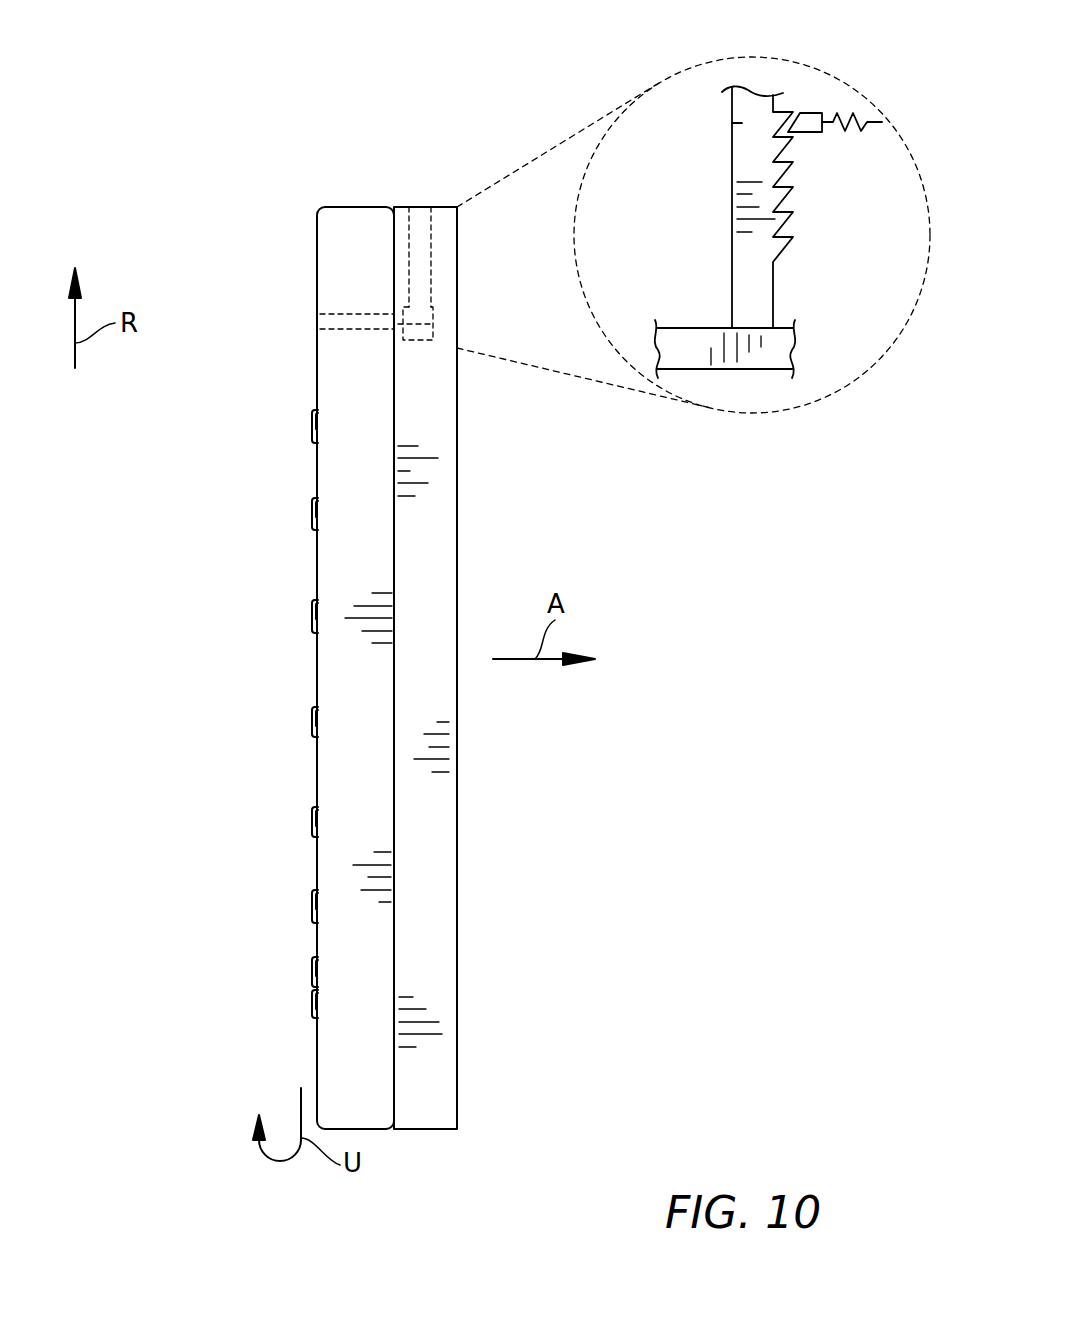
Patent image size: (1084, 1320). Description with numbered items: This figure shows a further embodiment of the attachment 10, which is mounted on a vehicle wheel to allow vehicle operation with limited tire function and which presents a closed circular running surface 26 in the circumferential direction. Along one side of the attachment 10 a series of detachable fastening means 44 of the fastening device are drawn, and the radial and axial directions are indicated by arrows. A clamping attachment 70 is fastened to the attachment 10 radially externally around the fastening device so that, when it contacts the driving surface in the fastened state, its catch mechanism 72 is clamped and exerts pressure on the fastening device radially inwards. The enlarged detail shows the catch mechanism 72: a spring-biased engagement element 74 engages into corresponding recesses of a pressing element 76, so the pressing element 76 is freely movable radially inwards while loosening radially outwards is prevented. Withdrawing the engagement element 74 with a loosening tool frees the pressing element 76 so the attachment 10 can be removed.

The attachment 10 is at (327, 233).
The running surface 26 is at (362, 216).
The fastening means 44 is at (362, 322).
The clamping attachment 70 is at (443, 1108).
The catch mechanism 72 is at (436, 200).
The engagement element 74 is at (808, 122).
The pressing element 76 is at (740, 123).